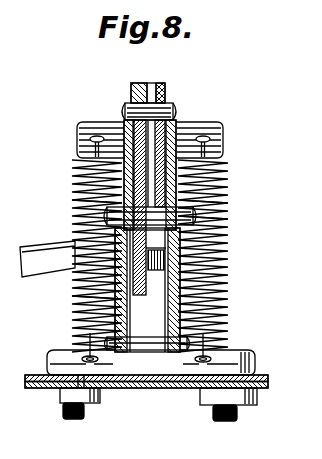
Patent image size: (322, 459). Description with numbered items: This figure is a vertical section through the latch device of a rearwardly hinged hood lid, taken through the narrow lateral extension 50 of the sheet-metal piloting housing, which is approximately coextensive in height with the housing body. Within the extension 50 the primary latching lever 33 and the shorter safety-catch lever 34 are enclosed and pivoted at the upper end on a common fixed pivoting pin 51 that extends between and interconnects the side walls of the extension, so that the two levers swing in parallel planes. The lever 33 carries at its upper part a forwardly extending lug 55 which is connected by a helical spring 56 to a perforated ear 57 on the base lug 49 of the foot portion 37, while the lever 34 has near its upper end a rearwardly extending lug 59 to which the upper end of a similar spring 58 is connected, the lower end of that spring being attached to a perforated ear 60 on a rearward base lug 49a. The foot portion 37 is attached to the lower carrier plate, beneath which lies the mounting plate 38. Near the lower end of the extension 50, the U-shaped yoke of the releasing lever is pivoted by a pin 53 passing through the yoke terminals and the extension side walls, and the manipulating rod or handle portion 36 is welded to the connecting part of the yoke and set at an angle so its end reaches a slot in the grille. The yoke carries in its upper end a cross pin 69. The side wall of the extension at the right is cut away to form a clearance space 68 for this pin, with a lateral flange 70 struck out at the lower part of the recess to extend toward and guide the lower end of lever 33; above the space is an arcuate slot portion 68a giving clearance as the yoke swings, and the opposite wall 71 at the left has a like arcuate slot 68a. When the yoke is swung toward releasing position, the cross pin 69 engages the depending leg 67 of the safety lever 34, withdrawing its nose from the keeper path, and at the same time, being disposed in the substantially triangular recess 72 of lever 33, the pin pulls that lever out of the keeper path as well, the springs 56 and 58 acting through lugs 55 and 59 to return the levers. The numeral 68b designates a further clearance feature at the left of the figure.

The primary latching lever 33 is at (133, 89).
The safety-catch lever 34 is at (158, 92).
The pivoting pin 51 is at (125, 109).
The lateral extension 50 is at (168, 148).
The forwardly extending lug 55 is at (77, 133).
The rearwardly extending lug 59 is at (223, 140).
The helical spring 56 is at (73, 190).
The spring 58 is at (218, 292).
The depending leg 67 is at (222, 205).
The clearance space 68 is at (226, 246).
The arcuate slot portion 68a is at (194, 215).
The sleeve portion 68b is at (77, 207).
The cross pin 69 is at (106, 214).
The triangular recess 72 is at (104, 226).
The manipulating rod or handle portion 36 is at (33, 258).
The opposite wall 71 is at (73, 295).
The lateral flange 70 is at (152, 284).
The base lug 49 is at (72, 352).
The rearward base lug 49a is at (252, 369).
The foot portion 37 is at (40, 365).
The mounting plate 38 is at (140, 382).
The perforated ear 57 is at (68, 391).
The pivot pin 53 is at (90, 378).
The perforated ear 60 is at (174, 372).